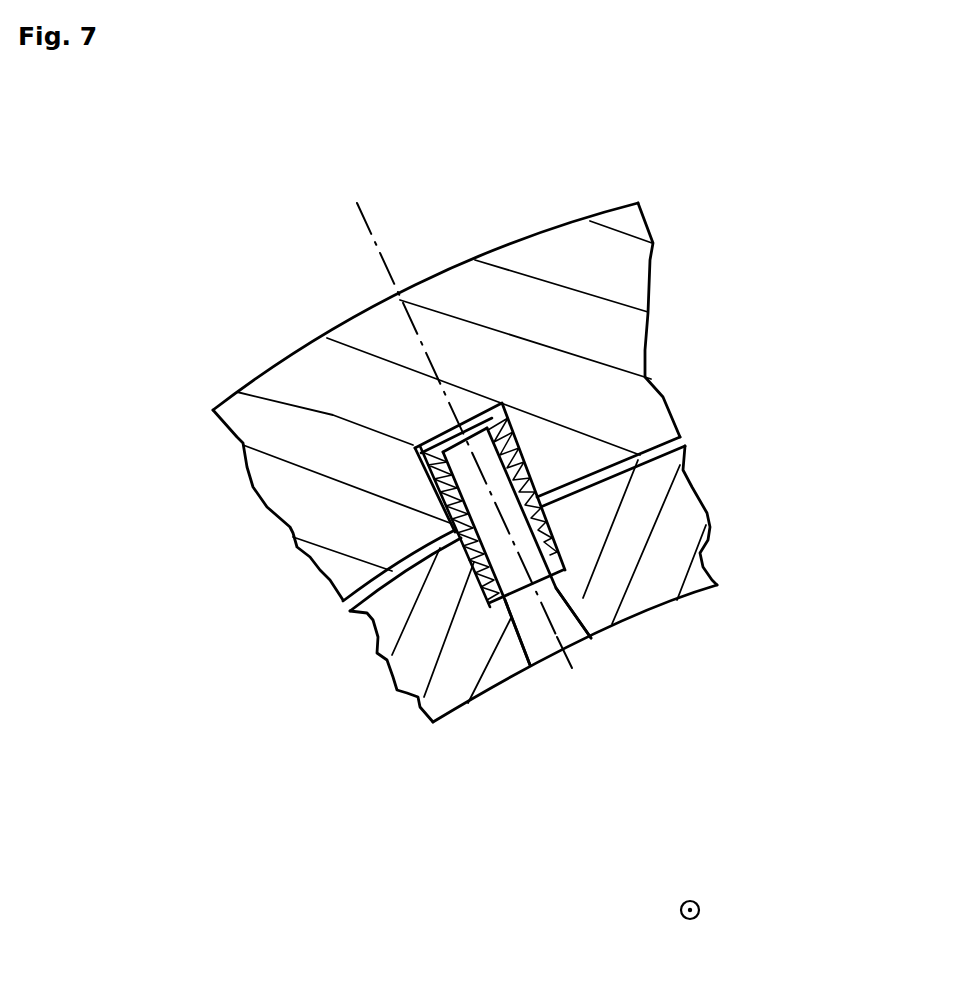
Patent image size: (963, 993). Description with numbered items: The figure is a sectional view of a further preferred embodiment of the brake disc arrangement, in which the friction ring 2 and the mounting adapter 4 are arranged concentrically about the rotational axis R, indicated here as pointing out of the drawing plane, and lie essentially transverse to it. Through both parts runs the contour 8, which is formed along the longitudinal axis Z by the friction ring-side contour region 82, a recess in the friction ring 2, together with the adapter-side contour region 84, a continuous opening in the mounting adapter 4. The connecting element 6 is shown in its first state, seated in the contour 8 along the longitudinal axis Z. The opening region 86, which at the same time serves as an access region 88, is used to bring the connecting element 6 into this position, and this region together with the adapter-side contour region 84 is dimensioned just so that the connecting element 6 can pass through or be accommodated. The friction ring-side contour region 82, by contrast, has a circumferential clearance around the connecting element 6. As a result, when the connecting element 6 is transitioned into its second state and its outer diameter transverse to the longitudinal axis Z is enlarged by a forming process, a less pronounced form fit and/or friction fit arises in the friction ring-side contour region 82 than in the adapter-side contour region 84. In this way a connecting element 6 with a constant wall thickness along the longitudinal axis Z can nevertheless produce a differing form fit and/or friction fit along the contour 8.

The friction ring 2 is at (627, 270).
The mounting adapter 4 is at (690, 514).
The connecting element 6 is at (591, 638).
The contour 8 is at (425, 521).
The friction ring-side contour region 82 is at (363, 454).
The adapter-side contour region 84 is at (394, 703).
The opening region 86 is at (537, 696).
The access region 88 is at (531, 637).
The longitudinal axis Z is at (464, 425).
The rotational axis R is at (718, 911).